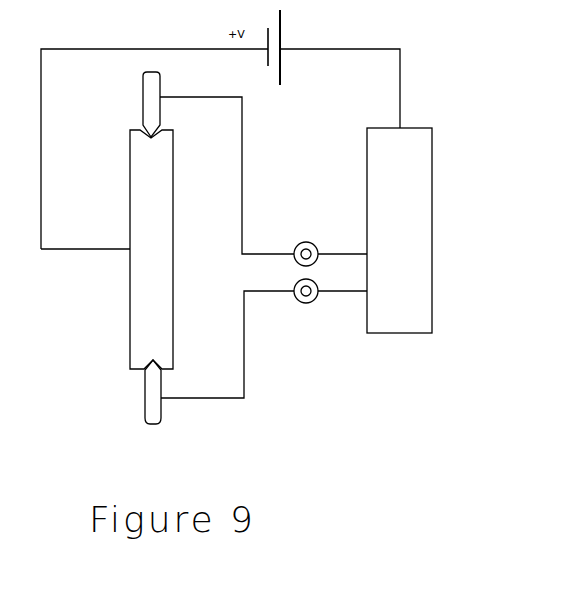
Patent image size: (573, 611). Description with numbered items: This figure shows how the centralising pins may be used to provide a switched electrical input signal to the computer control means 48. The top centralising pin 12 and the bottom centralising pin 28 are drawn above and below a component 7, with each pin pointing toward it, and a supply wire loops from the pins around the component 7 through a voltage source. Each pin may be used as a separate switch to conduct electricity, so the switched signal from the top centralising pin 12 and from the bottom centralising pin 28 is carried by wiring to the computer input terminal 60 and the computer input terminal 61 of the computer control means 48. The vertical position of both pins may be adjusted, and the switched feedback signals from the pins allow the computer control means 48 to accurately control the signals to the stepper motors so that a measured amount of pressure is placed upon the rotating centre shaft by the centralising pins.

The chamber body 7 is at (130, 212).
The top centralising pin 12 is at (143, 97).
The bottom centralising pin 28 is at (147, 399).
The computer control means 48 is at (432, 186).
The computer input terminal 60 is at (311, 241).
The computer input terminal 61 is at (310, 303).